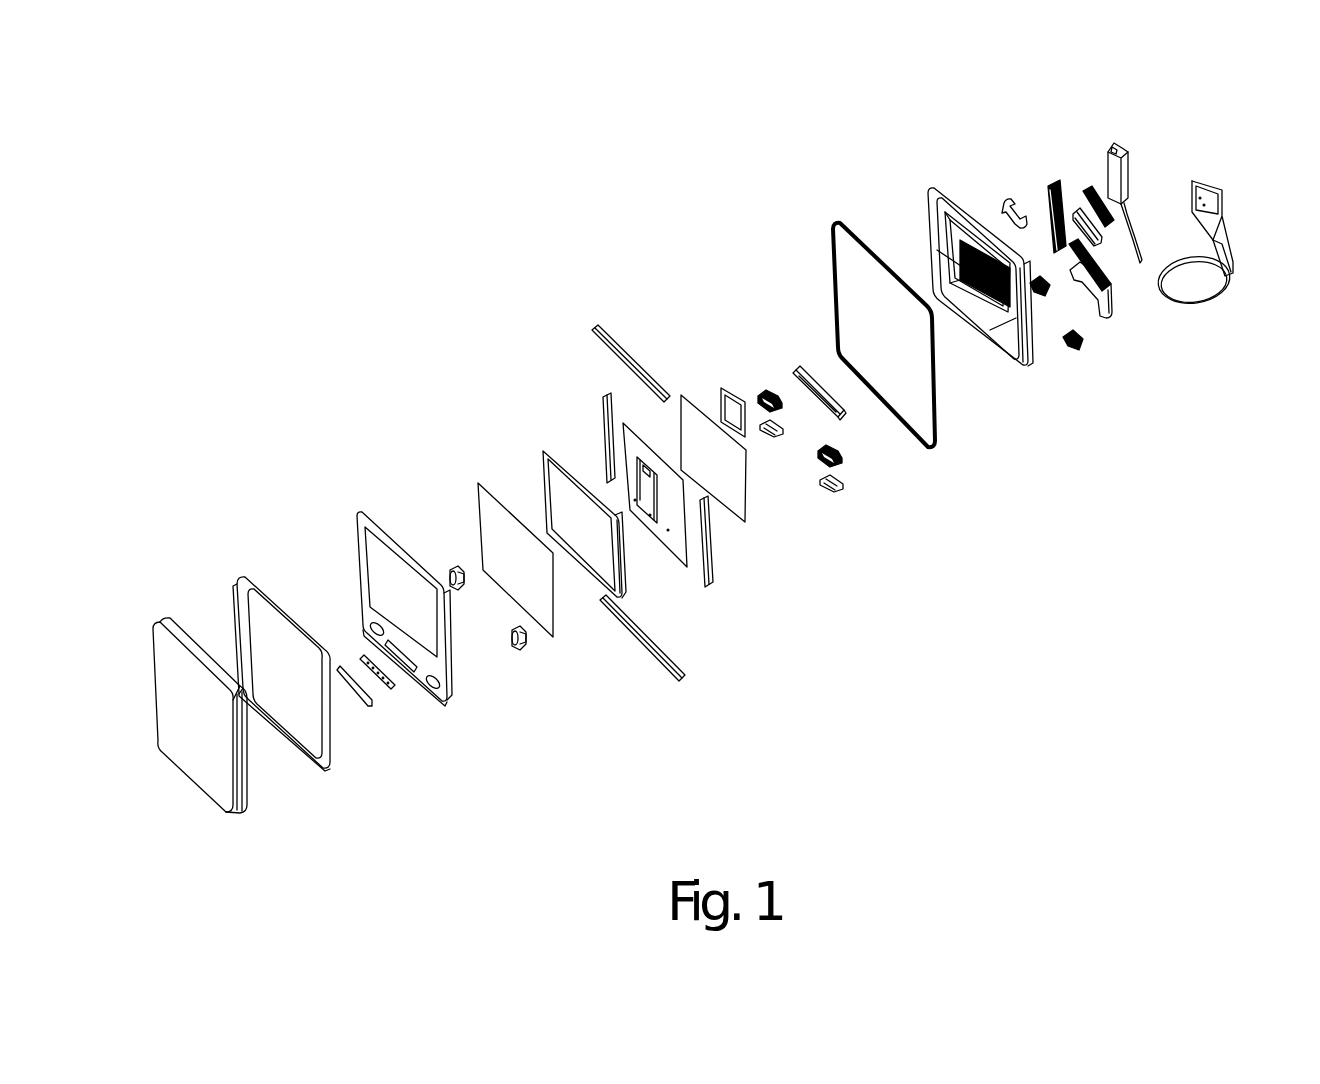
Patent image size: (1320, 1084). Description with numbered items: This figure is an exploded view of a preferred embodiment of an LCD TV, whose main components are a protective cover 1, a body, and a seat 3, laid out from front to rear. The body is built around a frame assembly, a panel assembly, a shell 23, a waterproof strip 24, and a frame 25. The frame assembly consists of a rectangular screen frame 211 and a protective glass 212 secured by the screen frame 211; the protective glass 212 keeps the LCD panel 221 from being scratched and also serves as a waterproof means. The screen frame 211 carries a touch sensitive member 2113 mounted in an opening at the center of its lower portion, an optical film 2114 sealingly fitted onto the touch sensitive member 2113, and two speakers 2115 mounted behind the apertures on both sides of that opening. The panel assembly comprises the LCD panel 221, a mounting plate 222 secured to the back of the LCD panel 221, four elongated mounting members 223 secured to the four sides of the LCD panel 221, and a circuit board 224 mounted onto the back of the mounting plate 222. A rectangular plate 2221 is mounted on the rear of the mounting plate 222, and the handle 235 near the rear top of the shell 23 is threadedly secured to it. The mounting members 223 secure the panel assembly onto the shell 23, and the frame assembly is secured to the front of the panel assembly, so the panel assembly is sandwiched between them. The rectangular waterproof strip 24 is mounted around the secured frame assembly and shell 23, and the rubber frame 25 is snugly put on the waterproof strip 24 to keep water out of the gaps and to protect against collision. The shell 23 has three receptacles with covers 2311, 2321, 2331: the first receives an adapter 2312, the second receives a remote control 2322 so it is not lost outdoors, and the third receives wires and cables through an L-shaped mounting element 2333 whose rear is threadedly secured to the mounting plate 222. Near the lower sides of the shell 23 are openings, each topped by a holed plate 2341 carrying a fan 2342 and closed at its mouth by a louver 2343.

The protective cover 1 is at (247, 791).
The frame 25 is at (277, 593).
The screen frame 211 is at (445, 703).
The touch sensitive member 2113 is at (392, 688).
The optical film 2114 is at (367, 704).
The speakers 2115 is at (458, 572).
The protective glass 212 is at (493, 507).
The LCD panel 221 is at (543, 460).
The mounting plate 222 is at (660, 542).
The elongated mounting members 223 is at (604, 398).
The circuit board 224 is at (747, 518).
The rectangular plate 2221 is at (723, 387).
The fan 2342 is at (768, 392).
The holed plate 2341 is at (773, 436).
The L-shaped mounting element 2333 is at (805, 372).
The waterproof strip 24 is at (855, 232).
The shell 23 is at (930, 190).
The handle 235 is at (1006, 200).
The louver 2343 is at (1042, 296).
The cover 2311 is at (1052, 187).
The cover 2321 is at (1090, 192).
The remote control 2322 is at (1098, 242).
The cover 2331 is at (1105, 316).
The adapter 2312 is at (1120, 150).
The seat 3 is at (1227, 300).